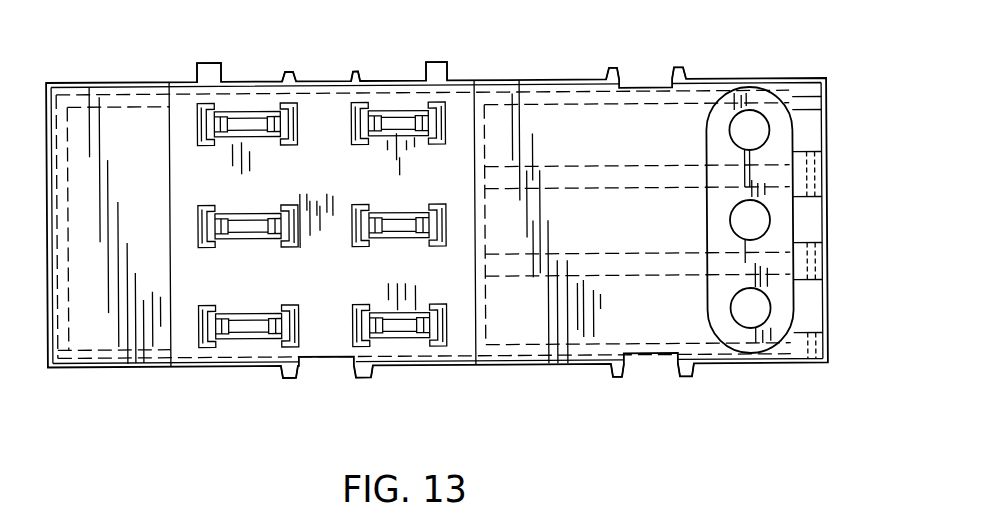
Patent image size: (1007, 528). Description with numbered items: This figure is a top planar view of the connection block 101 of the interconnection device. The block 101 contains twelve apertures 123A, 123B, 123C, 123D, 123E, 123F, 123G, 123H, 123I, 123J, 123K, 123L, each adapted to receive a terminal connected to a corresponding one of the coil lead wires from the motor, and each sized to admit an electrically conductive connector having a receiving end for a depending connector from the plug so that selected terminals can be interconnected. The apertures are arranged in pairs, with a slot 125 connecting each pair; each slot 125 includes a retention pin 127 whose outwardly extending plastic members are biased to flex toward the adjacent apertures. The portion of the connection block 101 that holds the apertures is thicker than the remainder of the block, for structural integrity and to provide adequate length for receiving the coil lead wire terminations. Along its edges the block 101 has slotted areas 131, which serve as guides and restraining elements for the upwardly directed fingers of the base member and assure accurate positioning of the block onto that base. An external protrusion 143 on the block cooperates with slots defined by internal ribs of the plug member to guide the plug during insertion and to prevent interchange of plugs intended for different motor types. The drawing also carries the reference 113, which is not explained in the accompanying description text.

The connection block 101 is at (890, 84).
The mounting slot 113 is at (793, 145).
The aperture 123A is at (207, 146).
The aperture 123B is at (212, 248).
The aperture 123C is at (207, 347).
The aperture 123D is at (278, 146).
The aperture 123E is at (279, 248).
The aperture 123F is at (281, 347).
The aperture 123G is at (356, 146).
The aperture 123H is at (362, 248).
The aperture 123I is at (365, 347).
The aperture 123J is at (436, 146).
The aperture 123K is at (433, 248).
The aperture 123L is at (438, 347).
The slot 125 is at (247, 111).
The retention pin 127 is at (400, 116).
The slotted area 131 is at (323, 80).
The external protrusion 143 is at (211, 62).